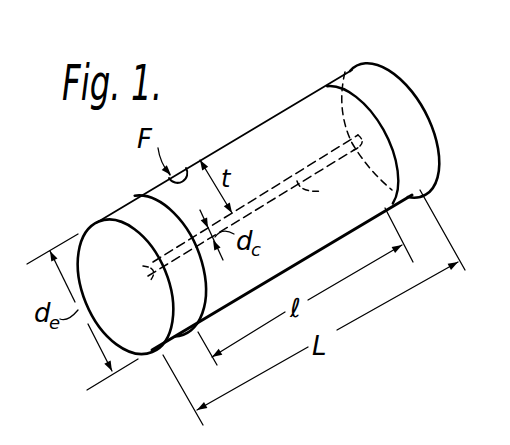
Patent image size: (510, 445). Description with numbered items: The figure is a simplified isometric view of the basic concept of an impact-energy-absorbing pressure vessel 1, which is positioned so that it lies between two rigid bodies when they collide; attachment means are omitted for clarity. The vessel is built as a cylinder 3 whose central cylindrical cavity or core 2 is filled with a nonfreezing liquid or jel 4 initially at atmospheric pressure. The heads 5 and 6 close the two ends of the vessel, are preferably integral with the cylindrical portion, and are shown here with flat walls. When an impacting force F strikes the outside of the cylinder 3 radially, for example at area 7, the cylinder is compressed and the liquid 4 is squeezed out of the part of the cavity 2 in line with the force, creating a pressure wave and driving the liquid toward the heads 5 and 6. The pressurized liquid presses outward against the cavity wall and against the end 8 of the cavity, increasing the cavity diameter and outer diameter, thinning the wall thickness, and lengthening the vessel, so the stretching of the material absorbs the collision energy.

The pressure vessel 1 is at (254, 201).
The cylindrical cavity or core 2 is at (275, 188).
The cylinder 3 is at (245, 131).
The nonfreezing liquid or jel 4 is at (322, 191).
The head 5 is at (124, 205).
The head 6 is at (352, 63).
The area 7 is at (183, 168).
The end of the cavity 8 is at (372, 130).